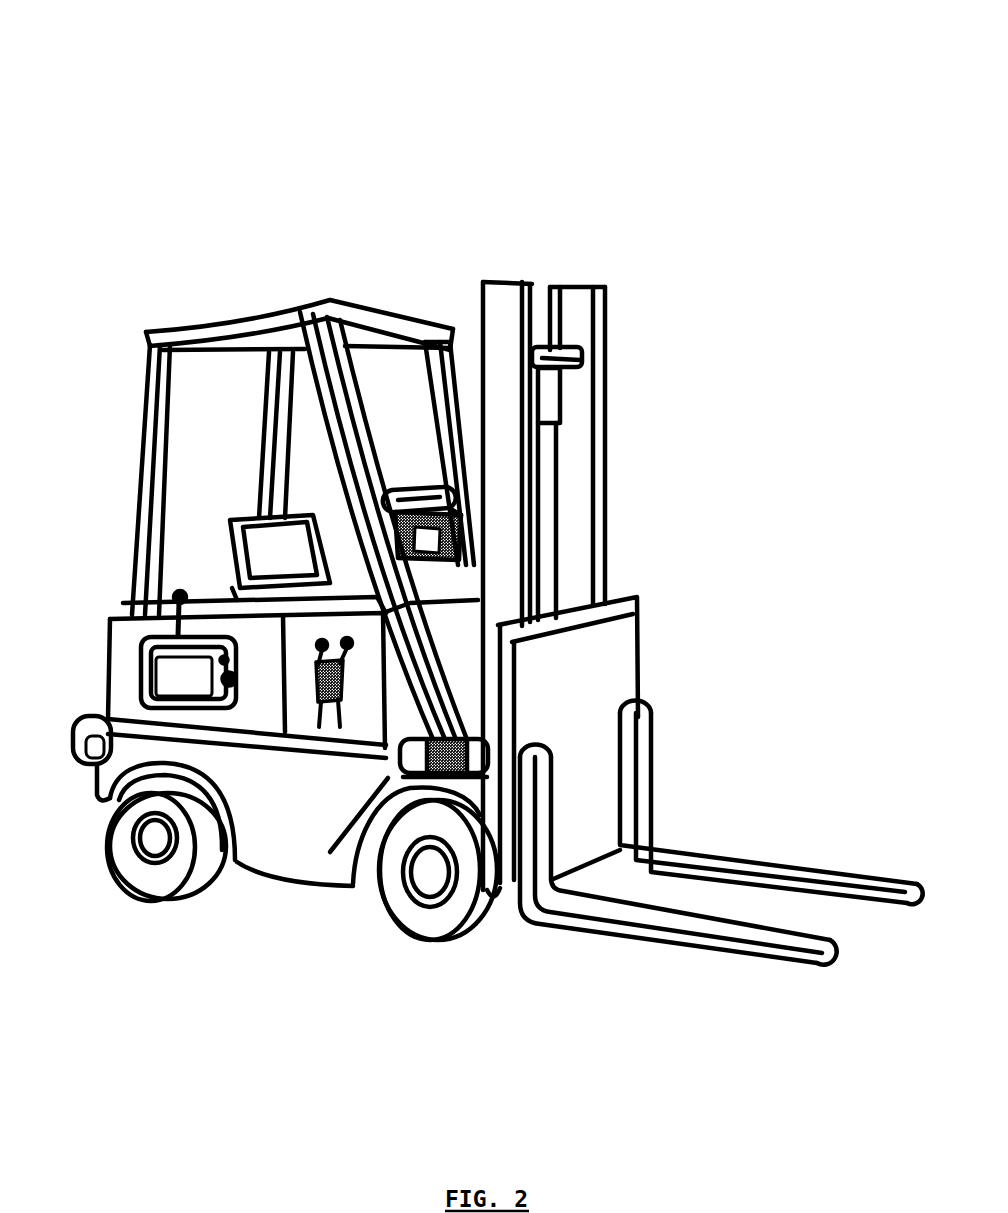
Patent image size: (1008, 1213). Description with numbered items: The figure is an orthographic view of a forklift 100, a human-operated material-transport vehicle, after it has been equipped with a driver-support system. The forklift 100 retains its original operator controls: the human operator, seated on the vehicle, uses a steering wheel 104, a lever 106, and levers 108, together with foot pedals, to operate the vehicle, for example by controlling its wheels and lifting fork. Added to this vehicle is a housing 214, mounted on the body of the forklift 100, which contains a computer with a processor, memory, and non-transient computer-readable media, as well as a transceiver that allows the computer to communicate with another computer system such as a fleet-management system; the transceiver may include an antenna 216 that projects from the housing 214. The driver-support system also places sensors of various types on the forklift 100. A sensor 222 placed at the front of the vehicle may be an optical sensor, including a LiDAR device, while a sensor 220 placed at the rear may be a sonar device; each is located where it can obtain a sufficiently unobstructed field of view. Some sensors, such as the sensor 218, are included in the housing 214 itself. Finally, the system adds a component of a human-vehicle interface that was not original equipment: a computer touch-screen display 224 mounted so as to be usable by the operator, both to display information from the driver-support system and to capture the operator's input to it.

The forklift 100 is at (463, 487).
The steering wheel 104 is at (420, 494).
The lever 106 is at (432, 533).
The levers 108 is at (313, 703).
The housing 214 is at (201, 697).
The antenna 216 is at (177, 634).
The sensor 218 is at (229, 682).
The sensor 220 is at (88, 748).
The sensor 222 is at (402, 757).
The computer touch-screen display 224 is at (467, 548).